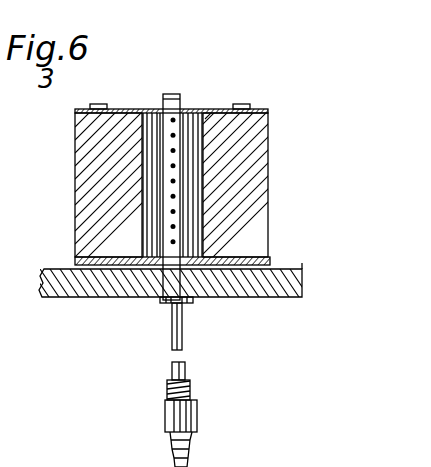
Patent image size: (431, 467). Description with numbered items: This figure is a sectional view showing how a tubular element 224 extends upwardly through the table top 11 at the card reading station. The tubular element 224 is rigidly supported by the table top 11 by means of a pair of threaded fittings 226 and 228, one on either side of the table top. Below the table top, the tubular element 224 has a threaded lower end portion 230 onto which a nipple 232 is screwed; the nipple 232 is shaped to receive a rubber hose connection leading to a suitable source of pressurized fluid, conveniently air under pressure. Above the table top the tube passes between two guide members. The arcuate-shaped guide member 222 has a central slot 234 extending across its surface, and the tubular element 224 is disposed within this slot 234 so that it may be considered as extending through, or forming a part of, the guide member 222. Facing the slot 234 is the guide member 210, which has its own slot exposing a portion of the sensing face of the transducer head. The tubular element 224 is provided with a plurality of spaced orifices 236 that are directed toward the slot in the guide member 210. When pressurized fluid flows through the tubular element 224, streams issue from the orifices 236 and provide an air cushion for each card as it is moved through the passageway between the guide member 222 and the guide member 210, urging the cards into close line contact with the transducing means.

The table top 11 is at (283, 297).
The guide member 210 is at (255, 220).
The arcuate-shaped guide member 222 is at (183, 166).
The tubular element 224 is at (184, 337).
The threaded fitting 226 is at (158, 303).
The threaded fitting 228 is at (160, 265).
The threaded lower end portion 230 is at (192, 393).
The nipple 232 is at (168, 408).
The slot 234 is at (163, 160).
The orifices 236 is at (178, 165).